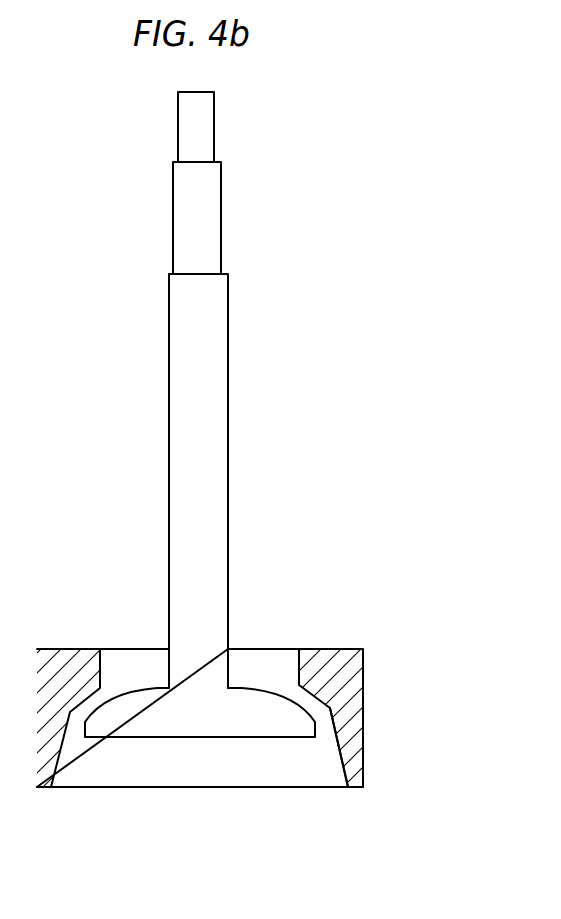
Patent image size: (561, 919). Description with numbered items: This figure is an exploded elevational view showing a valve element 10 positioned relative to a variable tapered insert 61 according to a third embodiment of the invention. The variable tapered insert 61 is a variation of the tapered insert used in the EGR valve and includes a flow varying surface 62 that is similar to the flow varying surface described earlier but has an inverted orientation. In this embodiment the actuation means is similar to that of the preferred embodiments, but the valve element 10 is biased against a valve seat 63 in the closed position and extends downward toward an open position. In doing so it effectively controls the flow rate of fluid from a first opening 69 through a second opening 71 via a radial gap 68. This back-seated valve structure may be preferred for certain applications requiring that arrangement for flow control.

The valve element 10 is at (238, 407).
The variable tapered insert 61 is at (363, 690).
The flow varying surface 62 is at (60, 745).
The valve seat 63 is at (300, 697).
The radial gap 68 is at (324, 743).
The first opening 69 is at (121, 636).
The second opening 71 is at (147, 802).